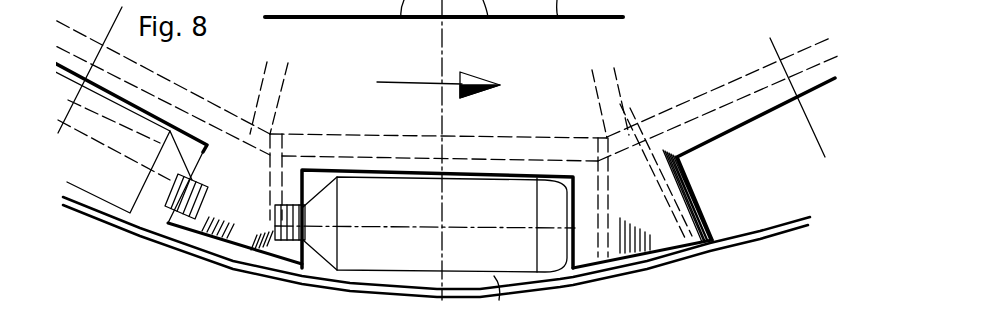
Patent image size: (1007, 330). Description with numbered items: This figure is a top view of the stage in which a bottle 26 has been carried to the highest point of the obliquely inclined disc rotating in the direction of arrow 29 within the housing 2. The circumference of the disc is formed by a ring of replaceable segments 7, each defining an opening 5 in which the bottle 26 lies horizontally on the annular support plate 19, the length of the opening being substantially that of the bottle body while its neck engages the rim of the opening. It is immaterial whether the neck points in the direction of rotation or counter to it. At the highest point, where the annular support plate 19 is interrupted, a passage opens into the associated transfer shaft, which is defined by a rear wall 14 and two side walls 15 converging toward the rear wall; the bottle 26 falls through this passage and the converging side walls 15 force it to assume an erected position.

The housing 2 is at (753, 244).
The openings 5 is at (147, 218).
The segments 7 is at (623, 167).
The rear wall 14 is at (307, 143).
The side walls 15 is at (272, 201).
The annular support plate 19 is at (233, 257).
The bottle 26 is at (394, 256).
The direction of rotation 29 is at (479, 73).